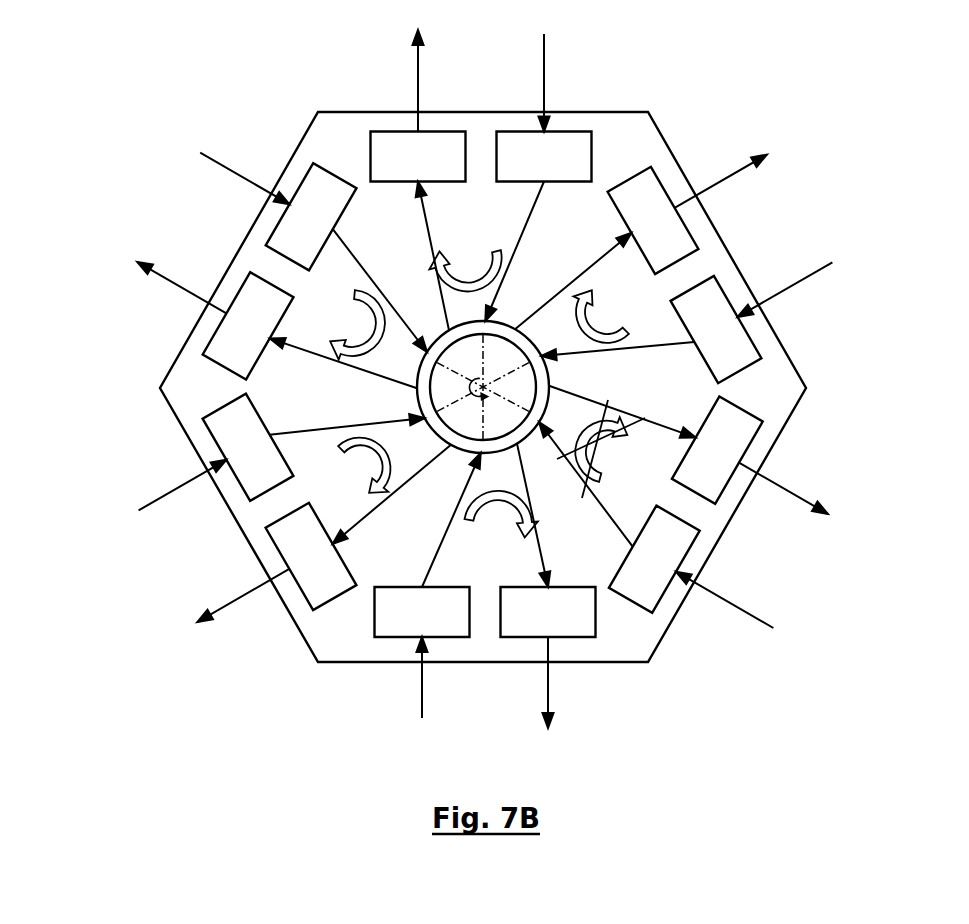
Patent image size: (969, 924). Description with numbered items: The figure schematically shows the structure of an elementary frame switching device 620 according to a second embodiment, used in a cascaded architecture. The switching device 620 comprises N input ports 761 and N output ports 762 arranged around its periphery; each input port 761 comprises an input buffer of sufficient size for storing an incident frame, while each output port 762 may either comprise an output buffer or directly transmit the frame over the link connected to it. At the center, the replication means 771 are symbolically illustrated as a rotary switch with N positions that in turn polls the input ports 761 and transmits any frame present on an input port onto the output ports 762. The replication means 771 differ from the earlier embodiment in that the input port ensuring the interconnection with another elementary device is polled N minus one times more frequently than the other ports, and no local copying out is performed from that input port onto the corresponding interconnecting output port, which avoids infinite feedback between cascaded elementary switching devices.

The switching device 620 is at (139, 160).
The input ports 761 is at (482, 385).
The output ports 762 is at (483, 385).
The replication means 771 is at (523, 328).